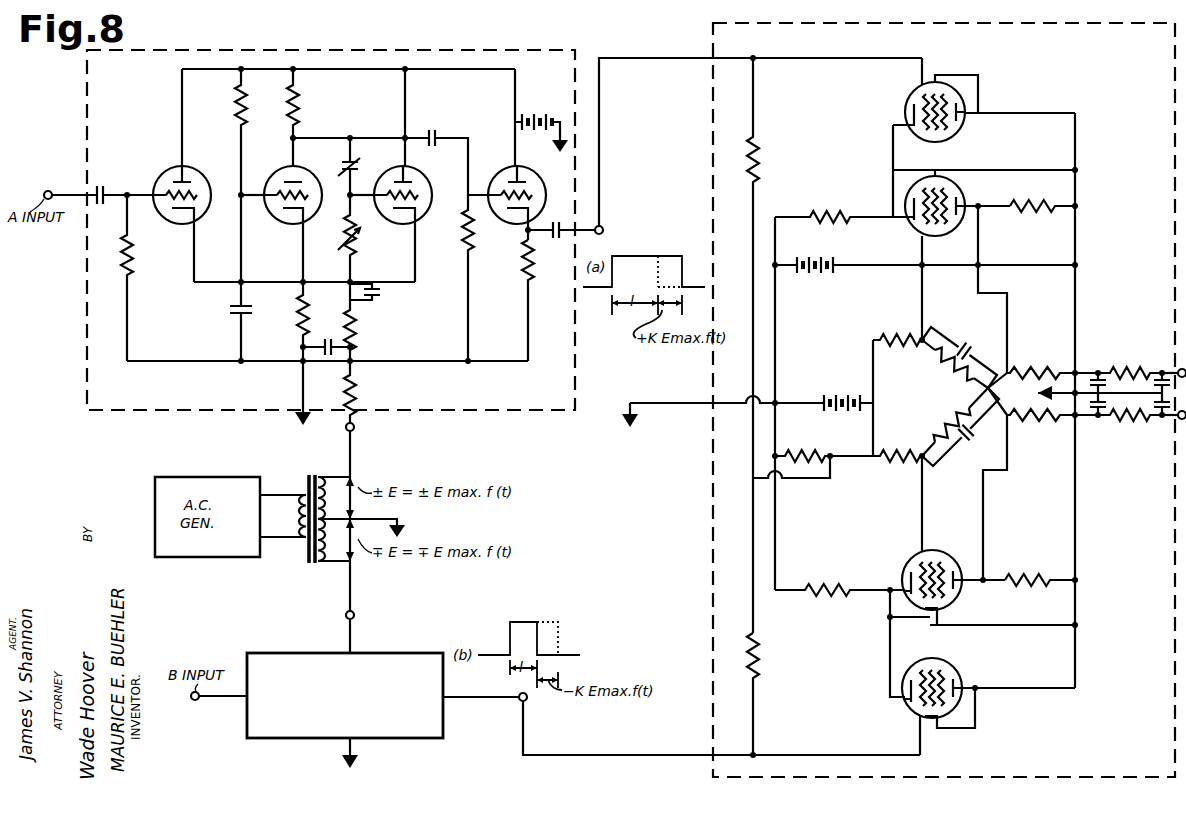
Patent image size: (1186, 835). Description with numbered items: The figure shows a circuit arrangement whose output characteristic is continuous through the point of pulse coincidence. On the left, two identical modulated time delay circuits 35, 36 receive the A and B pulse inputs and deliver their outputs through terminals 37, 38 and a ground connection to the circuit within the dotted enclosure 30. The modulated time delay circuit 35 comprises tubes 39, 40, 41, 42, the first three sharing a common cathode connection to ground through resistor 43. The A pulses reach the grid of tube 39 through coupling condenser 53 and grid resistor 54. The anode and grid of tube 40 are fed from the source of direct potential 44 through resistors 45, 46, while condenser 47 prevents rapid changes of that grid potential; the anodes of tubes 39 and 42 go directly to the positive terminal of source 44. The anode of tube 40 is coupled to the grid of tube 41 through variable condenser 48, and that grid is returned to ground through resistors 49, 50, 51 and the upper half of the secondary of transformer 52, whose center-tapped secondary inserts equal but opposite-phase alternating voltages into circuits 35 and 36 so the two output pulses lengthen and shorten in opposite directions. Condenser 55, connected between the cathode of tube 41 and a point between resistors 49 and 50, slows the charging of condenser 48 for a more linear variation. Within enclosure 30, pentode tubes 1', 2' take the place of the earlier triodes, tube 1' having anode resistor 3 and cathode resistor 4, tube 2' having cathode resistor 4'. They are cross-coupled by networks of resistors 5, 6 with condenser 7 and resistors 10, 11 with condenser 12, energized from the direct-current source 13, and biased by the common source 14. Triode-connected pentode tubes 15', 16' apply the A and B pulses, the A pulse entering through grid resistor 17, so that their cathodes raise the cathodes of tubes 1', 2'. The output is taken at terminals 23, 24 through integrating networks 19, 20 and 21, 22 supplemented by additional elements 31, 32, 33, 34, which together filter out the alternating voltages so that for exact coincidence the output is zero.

The pentode tube 1' is at (957, 217).
The pentode tube 2' is at (953, 582).
The anode resistor 3 is at (1032, 205).
The cathode resistor 4 is at (841, 206).
The cathode resistor 4' is at (840, 581).
The coupling resistor 5 is at (940, 366).
The coupling resistor 6 is at (896, 338).
The condenser 7 is at (968, 345).
The coupling resistor 10 is at (951, 425).
The coupling resistor 11 is at (880, 462).
The condenser 12 is at (963, 460).
The source of direct current 13 is at (801, 250).
The source of direct voltage 14 is at (849, 392).
The triode-connected pentode tube 15' is at (990, 102).
The triode-connected pentode tube 16' is at (988, 706).
The grid resistor 17 is at (759, 157).
The integrating network element 19 is at (1052, 364).
The integrating network element 20 is at (1107, 386).
The integrating network element 21 is at (1052, 426).
The integrating network element 22 is at (1107, 405).
The output terminal 23 is at (1182, 369).
The output terminal 24 is at (1182, 419).
The dotted enclosure 30 is at (712, 640).
The additional integrating network element 31 is at (1130, 364).
The additional integrating network element 32 is at (1160, 370).
The additional integrating network element 33 is at (1130, 428).
The additional integrating network element 34 is at (1165, 413).
The modulated time delay circuit 35 is at (142, 410).
The modulated time delay circuit 36 is at (434, 652).
The terminal 37 is at (603, 228).
The terminal 38 is at (526, 700).
The tube 39 is at (200, 175).
The tube 40 is at (304, 216).
The tube 41 is at (428, 178).
The tube 42 is at (510, 169).
The resistor 43 is at (311, 316).
The source of direct potential 44 is at (540, 120).
The resistor 45 is at (297, 119).
The resistor 46 is at (245, 119).
The condenser 47 is at (247, 306).
The variable condenser 48 is at (360, 164).
The resistor 49 is at (359, 242).
The resistor 50 is at (356, 328).
The resistor 51 is at (356, 385).
The transformer 52 is at (304, 486).
The coupling condenser 53 is at (104, 194).
The grid resistor 54 is at (133, 258).
The condenser 55 is at (379, 295).